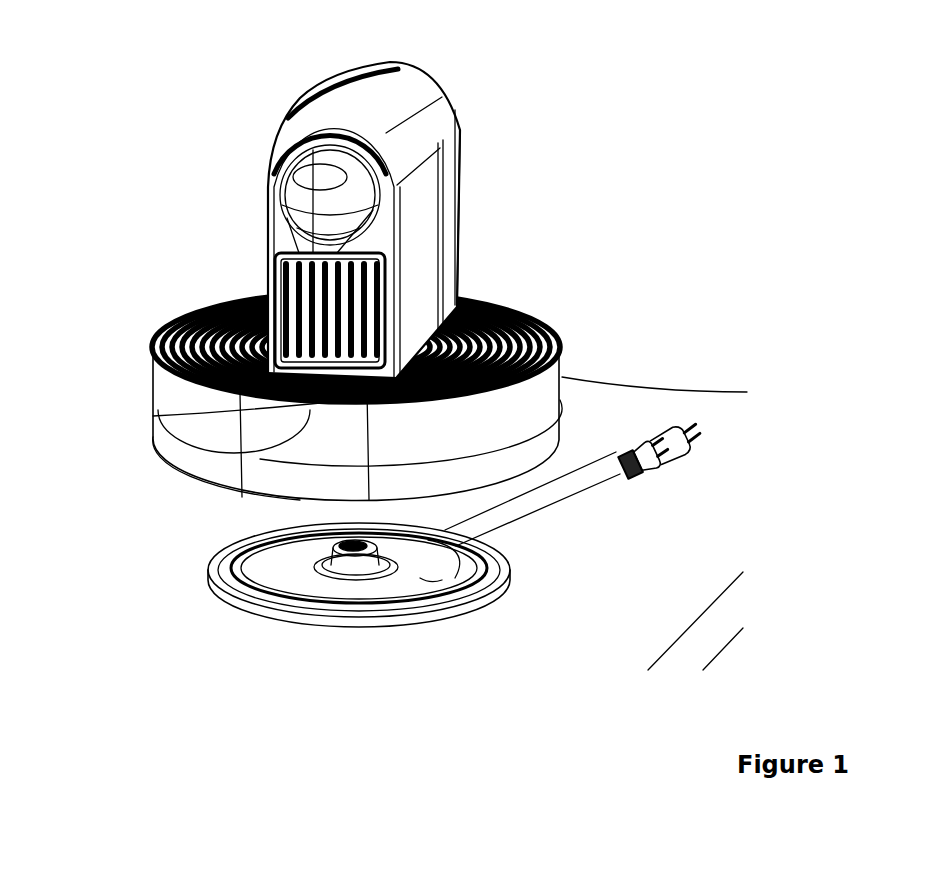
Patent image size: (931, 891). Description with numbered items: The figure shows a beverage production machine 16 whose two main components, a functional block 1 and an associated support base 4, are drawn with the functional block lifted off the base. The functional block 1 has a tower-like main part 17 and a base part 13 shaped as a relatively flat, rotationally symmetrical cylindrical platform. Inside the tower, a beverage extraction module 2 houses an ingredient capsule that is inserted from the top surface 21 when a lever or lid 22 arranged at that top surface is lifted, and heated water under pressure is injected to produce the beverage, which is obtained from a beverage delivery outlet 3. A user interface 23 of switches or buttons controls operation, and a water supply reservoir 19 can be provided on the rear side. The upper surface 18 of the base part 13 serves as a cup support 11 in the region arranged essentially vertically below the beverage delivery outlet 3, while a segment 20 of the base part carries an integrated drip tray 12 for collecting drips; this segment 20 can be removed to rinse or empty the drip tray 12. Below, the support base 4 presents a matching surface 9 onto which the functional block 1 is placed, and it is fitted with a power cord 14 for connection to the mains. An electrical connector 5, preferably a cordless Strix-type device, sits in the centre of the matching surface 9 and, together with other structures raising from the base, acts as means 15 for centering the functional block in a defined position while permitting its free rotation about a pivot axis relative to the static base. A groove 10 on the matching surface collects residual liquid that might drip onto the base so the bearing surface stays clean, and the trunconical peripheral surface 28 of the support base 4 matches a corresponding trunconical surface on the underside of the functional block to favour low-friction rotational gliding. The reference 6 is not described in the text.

The functional block 1 is at (220, 223).
The beverage extraction module 2 is at (423, 197).
The beverage delivery outlet 3 is at (268, 263).
The support base 4 is at (167, 587).
The electrical connector 5 is at (347, 547).
The drip grid 6 is at (438, 597).
The matching surface 9 is at (500, 578).
The groove 10 is at (473, 562).
The cup support 11 is at (153, 416).
The drip tray 12 is at (235, 453).
The base part 13 is at (567, 362).
The power cord 14 is at (597, 487).
The means for centering and matching 15 is at (360, 558).
The beverage production machine 16 is at (553, 149).
The tower-like main part 17 is at (463, 258).
The upper surface 18 is at (543, 325).
The water supply reservoir 19 is at (455, 210).
The segment 20 is at (268, 444).
The top surface 21 is at (313, 110).
The lever or lid 22 is at (305, 126).
The user interface 23 is at (283, 178).
The trunconical shaped peripheral surface 28 is at (247, 608).